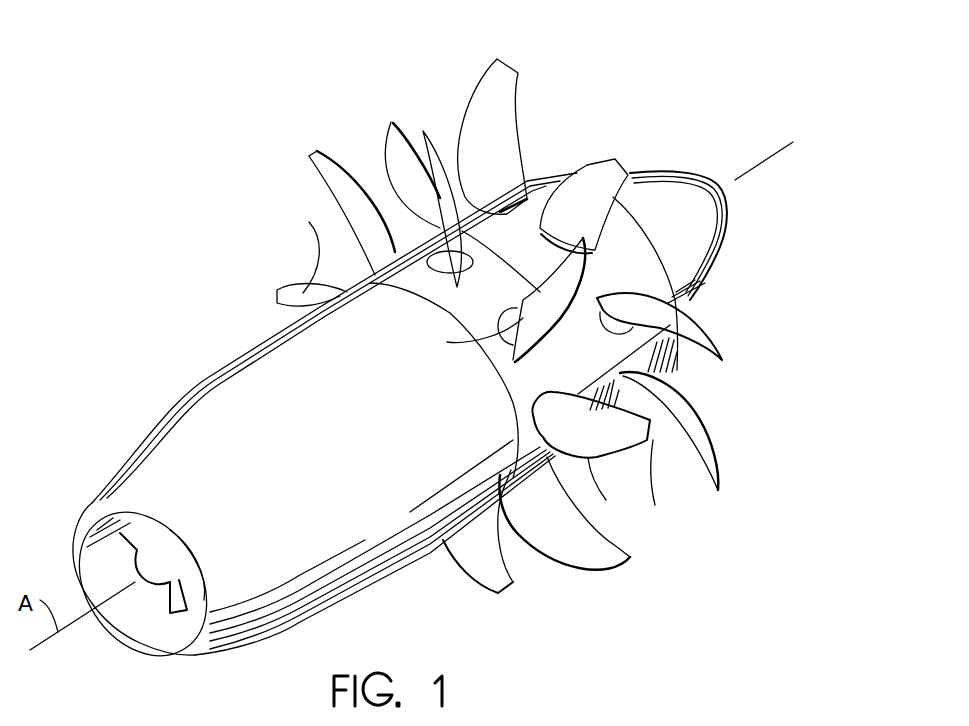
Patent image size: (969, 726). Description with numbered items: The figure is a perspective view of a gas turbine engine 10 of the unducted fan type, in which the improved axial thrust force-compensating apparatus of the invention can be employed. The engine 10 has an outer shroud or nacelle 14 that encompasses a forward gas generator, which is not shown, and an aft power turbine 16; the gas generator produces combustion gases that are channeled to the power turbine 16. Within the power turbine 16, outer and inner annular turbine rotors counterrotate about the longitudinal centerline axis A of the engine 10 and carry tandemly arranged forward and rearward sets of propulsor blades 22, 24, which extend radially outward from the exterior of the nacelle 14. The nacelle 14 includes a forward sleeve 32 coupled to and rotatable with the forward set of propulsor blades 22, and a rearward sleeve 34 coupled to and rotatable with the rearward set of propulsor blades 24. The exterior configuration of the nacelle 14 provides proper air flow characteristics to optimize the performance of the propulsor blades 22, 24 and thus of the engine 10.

The gas turbine engine 10 is at (558, 116).
The outer shroud or nacelle 14 is at (235, 362).
The power turbine 16 is at (694, 378).
The forward set of propulsor blades 22 is at (357, 202).
The rearward set of propulsor blades 24 is at (503, 150).
The forward sleeve 32 is at (541, 389).
The rearward sleeve 34 is at (641, 276).